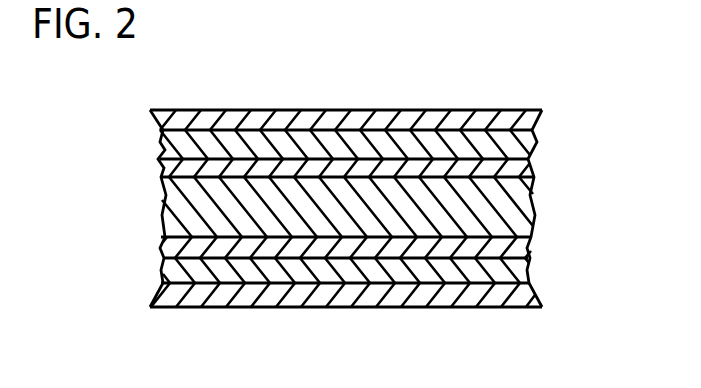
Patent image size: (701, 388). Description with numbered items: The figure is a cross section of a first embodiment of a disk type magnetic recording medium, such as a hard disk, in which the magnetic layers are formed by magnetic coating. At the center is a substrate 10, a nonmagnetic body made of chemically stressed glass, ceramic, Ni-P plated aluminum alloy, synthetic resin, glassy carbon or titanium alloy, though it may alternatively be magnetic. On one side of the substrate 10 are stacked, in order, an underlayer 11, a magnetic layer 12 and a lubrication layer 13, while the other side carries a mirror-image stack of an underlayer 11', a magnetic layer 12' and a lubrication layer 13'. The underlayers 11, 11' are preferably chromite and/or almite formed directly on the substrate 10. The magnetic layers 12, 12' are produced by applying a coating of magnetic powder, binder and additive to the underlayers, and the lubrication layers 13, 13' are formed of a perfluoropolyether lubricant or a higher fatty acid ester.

The substrate 10 is at (515, 211).
The underlayer 11 is at (392, 153).
The underlayer 11' is at (396, 254).
The magnetic layer 12 is at (374, 109).
The magnetic layer 12' is at (346, 305).
The lubrication layer 13 is at (346, 95).
The lubrication layer 13' is at (346, 318).